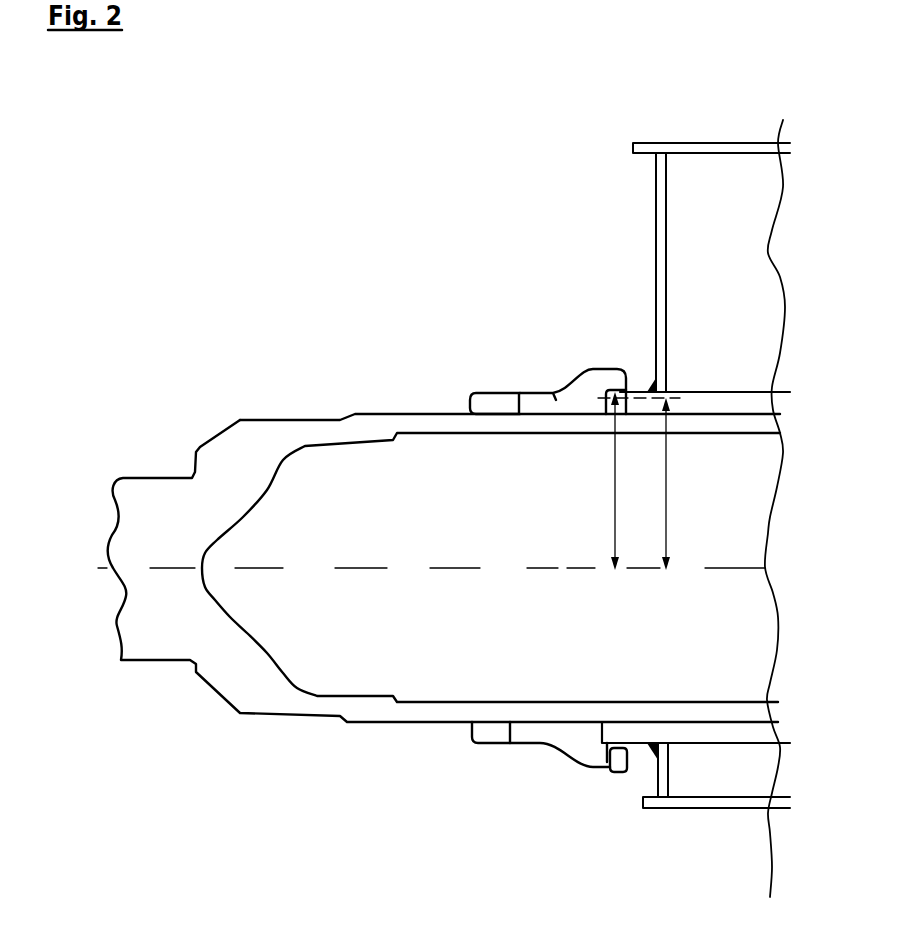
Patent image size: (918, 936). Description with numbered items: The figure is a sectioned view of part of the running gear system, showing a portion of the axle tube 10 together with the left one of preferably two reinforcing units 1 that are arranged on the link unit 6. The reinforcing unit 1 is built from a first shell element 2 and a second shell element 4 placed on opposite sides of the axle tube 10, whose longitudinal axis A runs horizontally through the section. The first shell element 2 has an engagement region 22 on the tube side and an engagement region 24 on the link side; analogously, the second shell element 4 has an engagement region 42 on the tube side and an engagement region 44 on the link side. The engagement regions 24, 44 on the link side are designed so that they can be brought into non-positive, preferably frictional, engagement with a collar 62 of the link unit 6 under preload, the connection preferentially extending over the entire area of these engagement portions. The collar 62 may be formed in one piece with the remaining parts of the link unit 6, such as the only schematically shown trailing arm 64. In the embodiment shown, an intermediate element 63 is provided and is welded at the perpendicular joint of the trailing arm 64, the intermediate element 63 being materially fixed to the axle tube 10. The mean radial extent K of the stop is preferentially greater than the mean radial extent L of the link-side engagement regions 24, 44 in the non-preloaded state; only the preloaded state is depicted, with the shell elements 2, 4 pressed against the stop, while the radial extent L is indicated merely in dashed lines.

The axle tube 10 is at (361, 425).
The reinforcing unit 1 is at (499, 343).
The engagement region on the tube side 22 is at (518, 414).
The first shell element 2 is at (552, 390).
The engagement region on the link side 24 is at (621, 389).
The collar 62 is at (651, 388).
The intermediate element 63 is at (655, 443).
The trailing arm 64 is at (656, 182).
The engagement region on the tube side 42 is at (505, 726).
The second shell element 4 is at (505, 797).
The engagement region on the link side 44 is at (607, 757).
The link unit 6 is at (695, 819).
The axis of rotation A is at (360, 570).
The mean radial extent of the stop K is at (615, 485).
The mean radial extent of the engagement region on the link side L is at (666, 482).